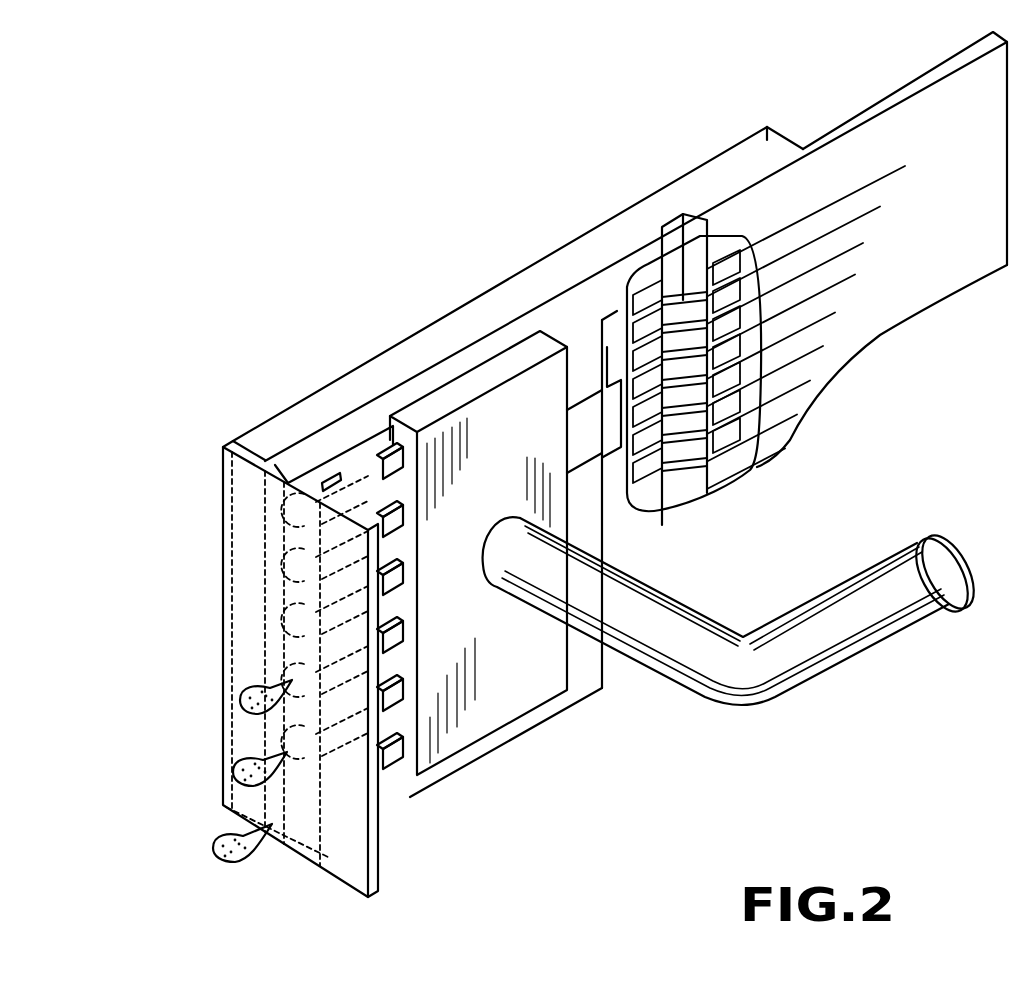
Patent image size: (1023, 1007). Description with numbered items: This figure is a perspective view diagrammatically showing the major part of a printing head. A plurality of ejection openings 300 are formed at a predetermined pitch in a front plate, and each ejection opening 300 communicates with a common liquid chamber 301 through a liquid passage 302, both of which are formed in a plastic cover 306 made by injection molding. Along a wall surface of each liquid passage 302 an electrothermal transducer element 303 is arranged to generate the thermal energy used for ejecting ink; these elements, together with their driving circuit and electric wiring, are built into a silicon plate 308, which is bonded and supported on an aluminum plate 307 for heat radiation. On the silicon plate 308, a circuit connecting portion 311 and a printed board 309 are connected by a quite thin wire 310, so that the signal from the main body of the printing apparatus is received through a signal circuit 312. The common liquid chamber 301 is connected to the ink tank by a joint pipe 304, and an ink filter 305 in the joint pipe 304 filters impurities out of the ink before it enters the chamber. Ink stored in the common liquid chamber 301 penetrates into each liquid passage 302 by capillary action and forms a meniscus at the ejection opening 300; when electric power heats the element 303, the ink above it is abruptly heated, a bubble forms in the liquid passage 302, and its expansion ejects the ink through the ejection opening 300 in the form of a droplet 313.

The ejection openings 300 is at (298, 512).
The common liquid chamber 301 is at (498, 712).
The liquid passage 302 is at (367, 462).
The electrothermal transducer element 303 is at (322, 538).
The joint pipe 304 is at (833, 650).
The ink filter 305 is at (960, 613).
The plastic cover 306 is at (580, 677).
The aluminum plate 307 is at (385, 367).
The silicon plate 308 is at (465, 352).
The printed board 309 is at (752, 205).
The thin wire 310 is at (683, 272).
The circuit connecting portion 311 is at (613, 285).
The signal circuit 312 is at (870, 177).
The droplet 313 is at (273, 817).